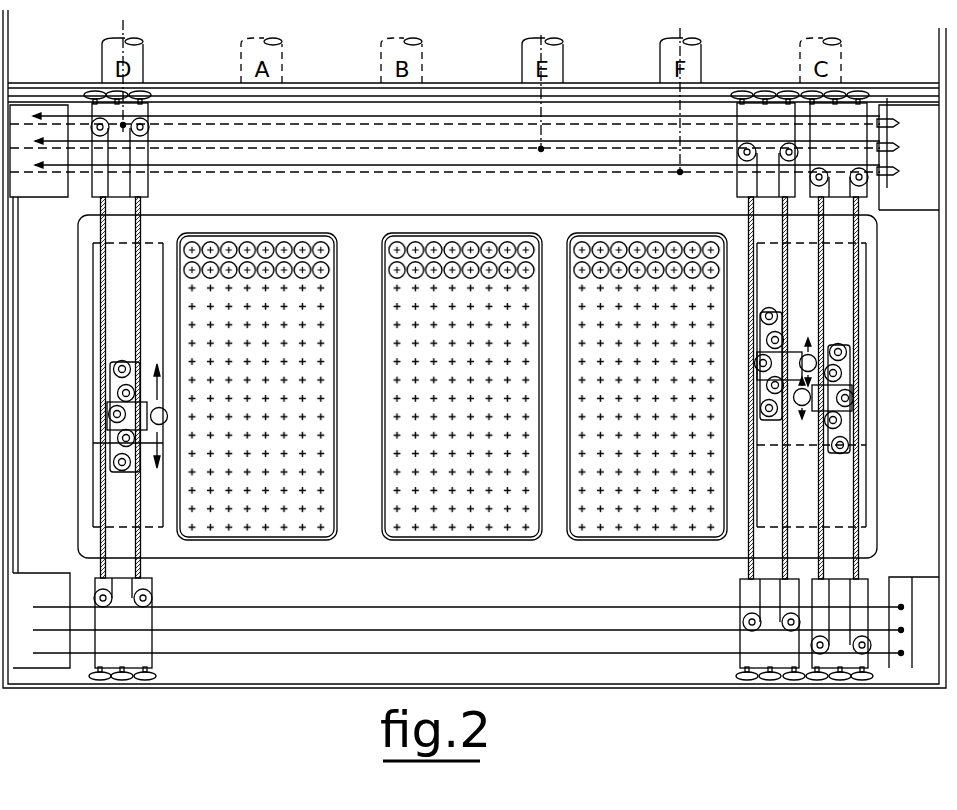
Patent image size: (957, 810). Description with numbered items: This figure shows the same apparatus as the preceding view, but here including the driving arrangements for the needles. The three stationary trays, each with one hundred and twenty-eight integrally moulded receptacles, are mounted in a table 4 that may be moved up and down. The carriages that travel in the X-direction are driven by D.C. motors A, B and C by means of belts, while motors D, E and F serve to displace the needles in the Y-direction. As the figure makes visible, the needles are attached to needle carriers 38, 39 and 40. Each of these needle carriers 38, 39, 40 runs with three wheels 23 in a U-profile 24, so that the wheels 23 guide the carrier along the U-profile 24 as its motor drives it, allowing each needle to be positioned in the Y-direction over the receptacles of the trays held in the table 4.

The table 4 is at (80, 305).
The wheels 23 is at (108, 421).
The U-profile 24 is at (104, 540).
The needle carrier 38 is at (107, 400).
The needle carrier 39 is at (788, 352).
The needle carrier 40 is at (822, 391).